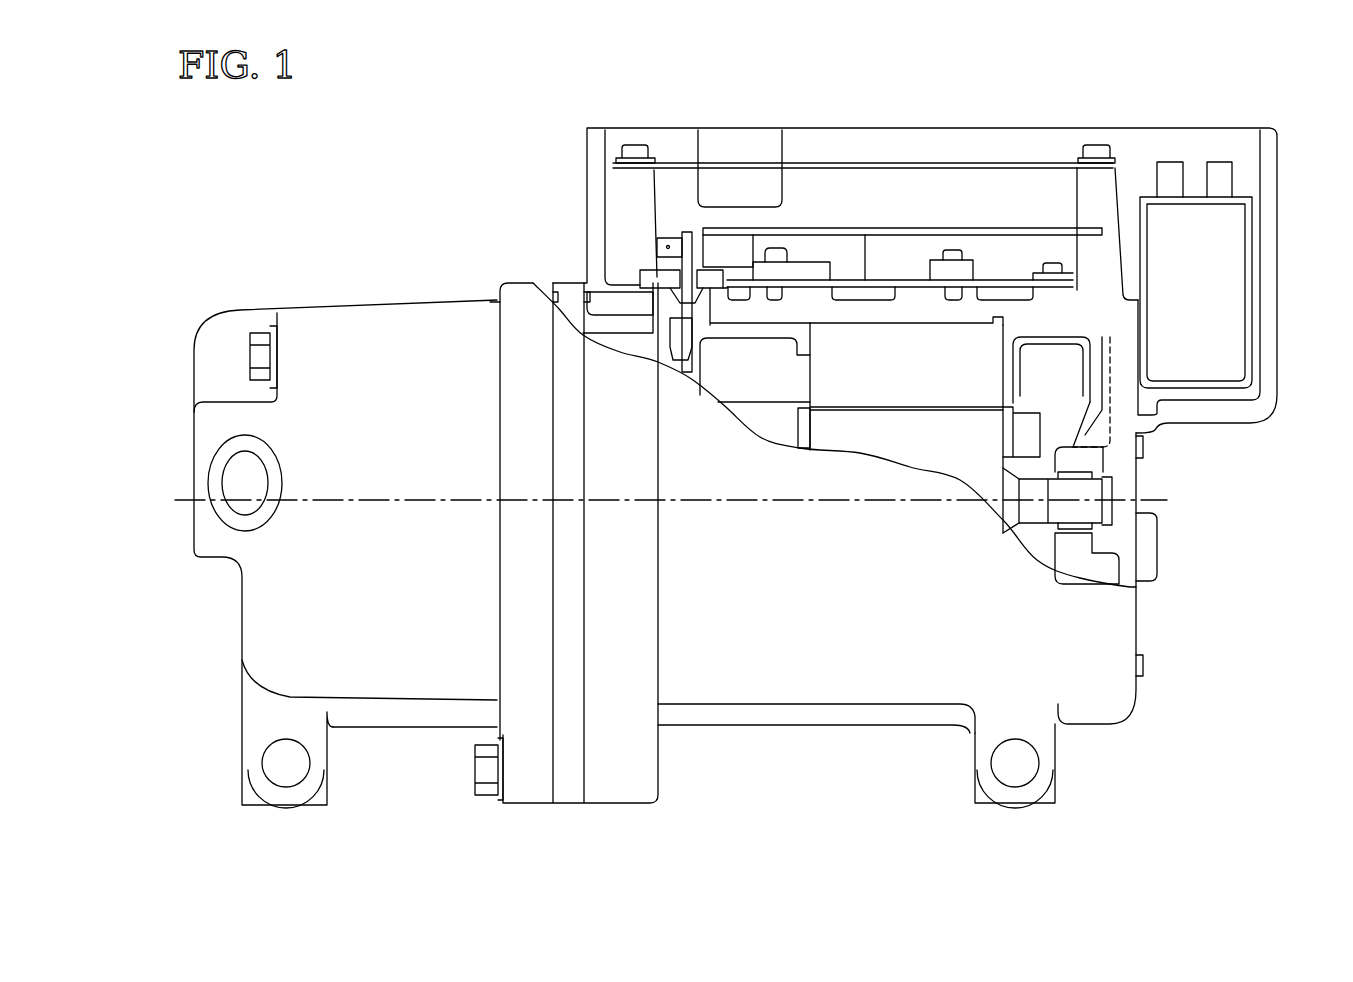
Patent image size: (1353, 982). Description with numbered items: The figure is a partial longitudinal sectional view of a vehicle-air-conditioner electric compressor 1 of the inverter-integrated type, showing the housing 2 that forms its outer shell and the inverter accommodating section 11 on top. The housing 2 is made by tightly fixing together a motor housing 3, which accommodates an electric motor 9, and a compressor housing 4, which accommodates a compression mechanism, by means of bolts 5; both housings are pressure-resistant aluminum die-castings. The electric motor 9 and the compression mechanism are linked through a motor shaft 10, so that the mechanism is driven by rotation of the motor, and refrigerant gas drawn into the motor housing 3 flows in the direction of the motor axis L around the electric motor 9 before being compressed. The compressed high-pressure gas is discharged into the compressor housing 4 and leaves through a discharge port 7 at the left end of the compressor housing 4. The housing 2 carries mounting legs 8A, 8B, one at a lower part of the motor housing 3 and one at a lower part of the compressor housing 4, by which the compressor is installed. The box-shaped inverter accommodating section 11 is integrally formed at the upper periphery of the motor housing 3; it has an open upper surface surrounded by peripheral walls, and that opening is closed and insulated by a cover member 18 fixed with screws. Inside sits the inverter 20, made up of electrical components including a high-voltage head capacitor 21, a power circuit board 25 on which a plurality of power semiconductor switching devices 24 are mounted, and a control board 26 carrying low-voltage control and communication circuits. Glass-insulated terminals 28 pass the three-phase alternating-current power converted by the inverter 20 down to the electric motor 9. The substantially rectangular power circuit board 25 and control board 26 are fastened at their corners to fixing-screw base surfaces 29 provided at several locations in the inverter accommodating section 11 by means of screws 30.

The vehicle-air-conditioner electric compressor 1 is at (417, 157).
The housing 2 is at (718, 730).
The motor housing 3 is at (907, 623).
The compressor housing 4 is at (326, 561).
The bolts 5 is at (483, 795).
The discharge port 7 is at (232, 478).
The mounting leg 8A is at (987, 773).
The mounting leg 8B is at (275, 763).
The electric motor 9 is at (870, 423).
The motor shaft 10 is at (980, 482).
The inverter accommodating section 11 is at (1240, 275).
The cover member 18 is at (1012, 127).
The inverter 20 is at (907, 158).
The head capacitor 21 is at (1228, 318).
The power semiconductor switching devices 24 is at (920, 265).
The power circuit board 25 is at (808, 230).
The control board 26 is at (822, 160).
The glass-insulated terminals 28 is at (685, 262).
The fixing-screw base surfaces 29 is at (622, 190).
The screws 30 is at (632, 143).
The motor axis L is at (757, 508).